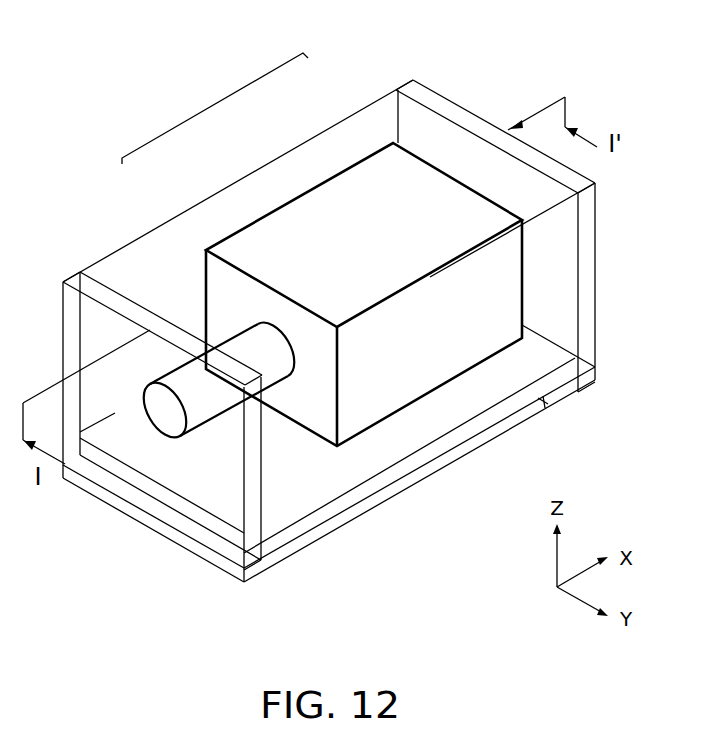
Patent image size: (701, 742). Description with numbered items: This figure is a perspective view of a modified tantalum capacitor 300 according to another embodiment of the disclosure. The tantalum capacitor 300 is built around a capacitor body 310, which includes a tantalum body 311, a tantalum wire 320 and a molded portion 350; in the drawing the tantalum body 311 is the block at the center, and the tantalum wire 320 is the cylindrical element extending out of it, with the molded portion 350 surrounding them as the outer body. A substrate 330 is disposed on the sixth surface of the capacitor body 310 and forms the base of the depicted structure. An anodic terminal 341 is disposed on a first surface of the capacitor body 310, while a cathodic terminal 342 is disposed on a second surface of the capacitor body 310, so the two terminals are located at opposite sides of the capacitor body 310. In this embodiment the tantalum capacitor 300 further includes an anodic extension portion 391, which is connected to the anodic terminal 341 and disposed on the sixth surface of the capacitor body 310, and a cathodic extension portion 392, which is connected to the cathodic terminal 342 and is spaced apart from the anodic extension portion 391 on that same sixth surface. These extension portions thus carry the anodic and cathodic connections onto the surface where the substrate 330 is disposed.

The tantalum capacitor 300 is at (133, 72).
The capacitor body 310 is at (216, 105).
The tantalum body 311 is at (347, 186).
The tantalum wire 320 is at (137, 340).
The substrate 330 is at (443, 453).
The anodic terminal 341 is at (80, 270).
The cathodic terminal 342 is at (410, 80).
The molded portion 350 is at (257, 168).
The anodic extension portion 391 is at (268, 563).
The cathodic extension portion 392 is at (572, 392).